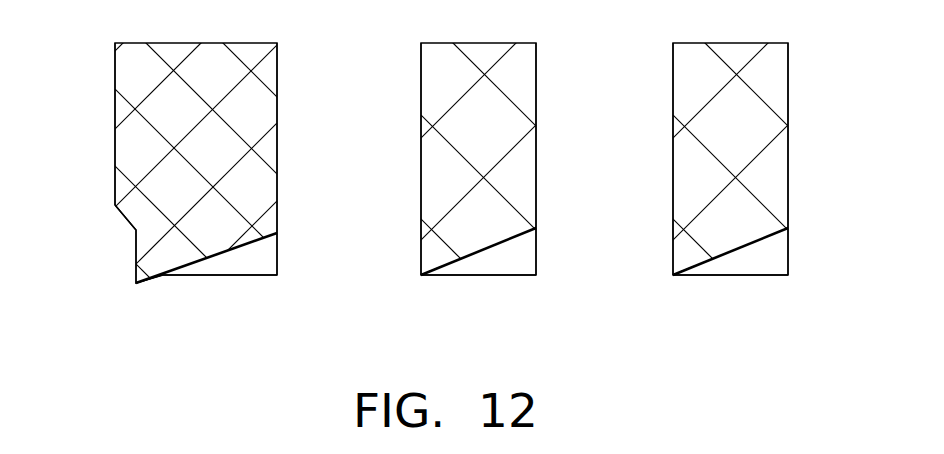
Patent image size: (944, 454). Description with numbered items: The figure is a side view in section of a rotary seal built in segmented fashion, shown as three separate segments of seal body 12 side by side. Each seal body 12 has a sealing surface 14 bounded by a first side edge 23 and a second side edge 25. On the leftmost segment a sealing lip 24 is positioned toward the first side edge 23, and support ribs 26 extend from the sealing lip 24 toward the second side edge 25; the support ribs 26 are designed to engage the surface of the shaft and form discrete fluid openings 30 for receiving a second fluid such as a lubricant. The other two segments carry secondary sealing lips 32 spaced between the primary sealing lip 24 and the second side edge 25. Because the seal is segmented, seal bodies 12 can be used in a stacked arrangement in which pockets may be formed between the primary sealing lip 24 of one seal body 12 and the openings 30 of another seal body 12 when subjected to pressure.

The seal body 12 is at (152, 63).
The sealing surface 14 is at (491, 200).
The first side edge 23 is at (115, 148).
The sealing lip 24 is at (136, 270).
The second side edge 25 is at (277, 170).
The support ribs 26 is at (277, 253).
The fluid openings 30 is at (240, 260).
The secondary sealing lips 32 is at (421, 275).